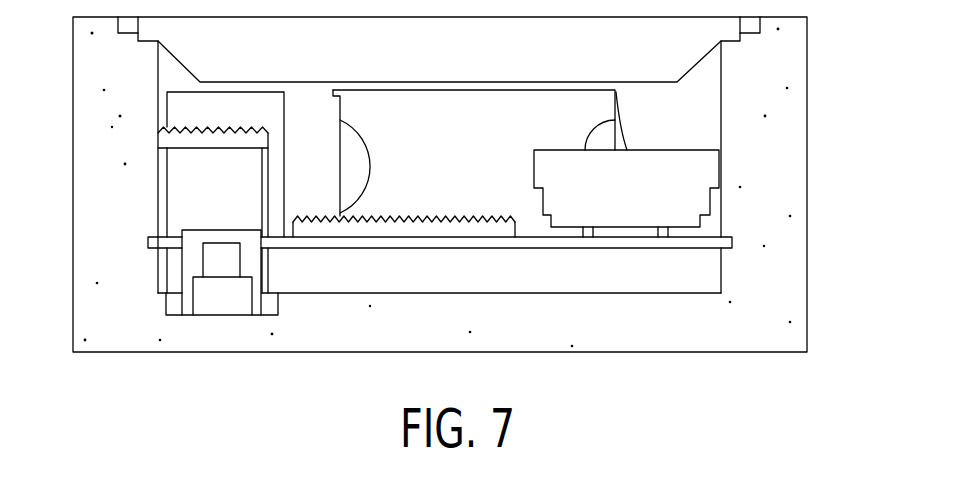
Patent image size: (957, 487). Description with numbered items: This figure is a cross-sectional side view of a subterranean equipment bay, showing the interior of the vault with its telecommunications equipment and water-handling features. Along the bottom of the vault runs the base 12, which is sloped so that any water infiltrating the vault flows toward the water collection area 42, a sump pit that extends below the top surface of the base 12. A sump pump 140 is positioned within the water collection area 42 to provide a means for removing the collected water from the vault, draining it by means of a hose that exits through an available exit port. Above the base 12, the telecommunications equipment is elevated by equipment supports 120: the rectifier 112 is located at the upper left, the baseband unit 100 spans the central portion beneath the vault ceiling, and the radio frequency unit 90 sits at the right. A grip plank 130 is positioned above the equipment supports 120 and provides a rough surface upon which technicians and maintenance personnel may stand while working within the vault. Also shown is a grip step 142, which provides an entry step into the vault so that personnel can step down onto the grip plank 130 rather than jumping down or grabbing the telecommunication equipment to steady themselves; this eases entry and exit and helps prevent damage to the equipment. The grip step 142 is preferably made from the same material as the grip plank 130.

The base 12 is at (333, 293).
The water collection area 42 is at (173, 316).
The radio frequency unit 90 is at (697, 178).
The baseband unit 100 is at (525, 103).
The rectifier 112 is at (180, 113).
The equipment supports 120 is at (533, 240).
The grip plank 130 is at (313, 221).
The sump pump 140 is at (227, 293).
The grip step 142 is at (217, 137).